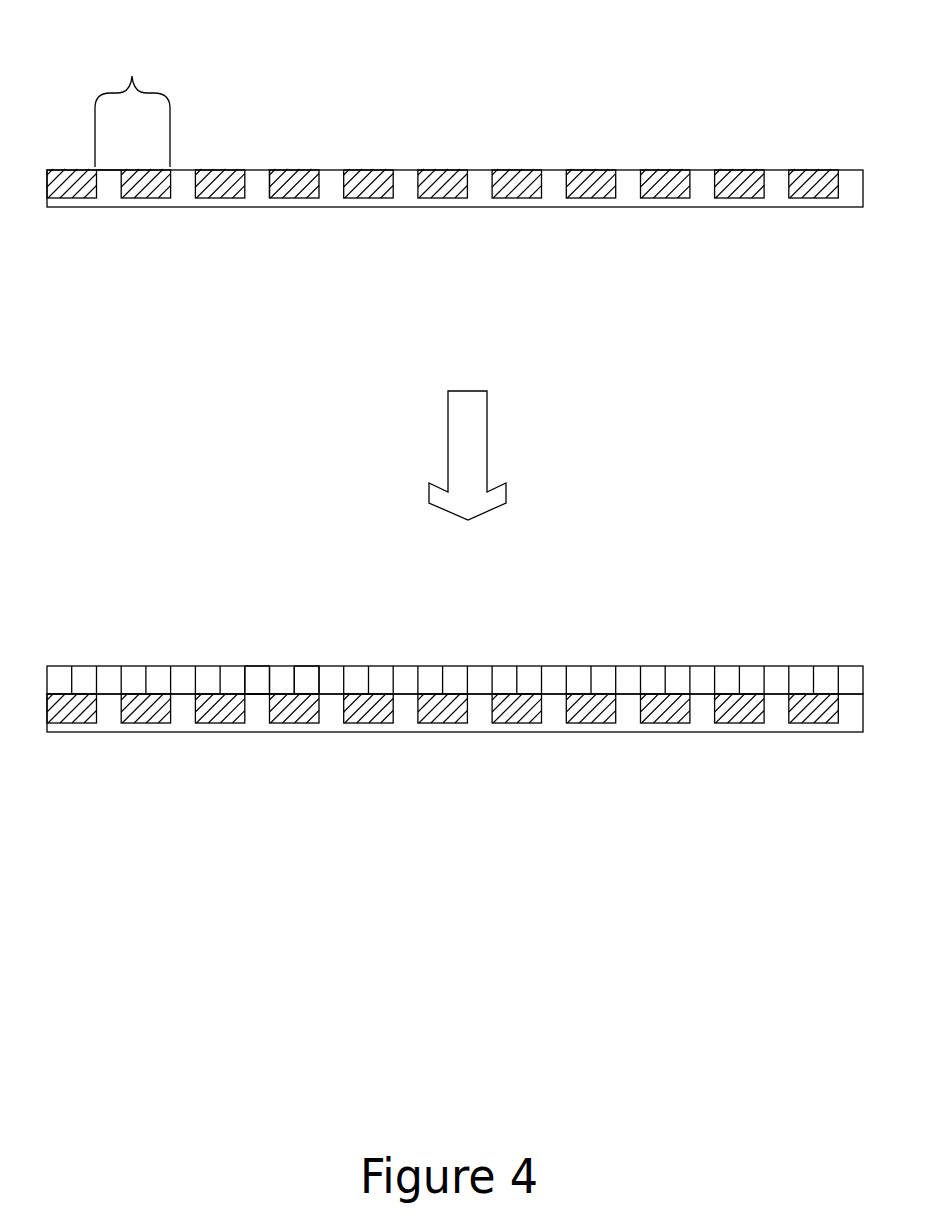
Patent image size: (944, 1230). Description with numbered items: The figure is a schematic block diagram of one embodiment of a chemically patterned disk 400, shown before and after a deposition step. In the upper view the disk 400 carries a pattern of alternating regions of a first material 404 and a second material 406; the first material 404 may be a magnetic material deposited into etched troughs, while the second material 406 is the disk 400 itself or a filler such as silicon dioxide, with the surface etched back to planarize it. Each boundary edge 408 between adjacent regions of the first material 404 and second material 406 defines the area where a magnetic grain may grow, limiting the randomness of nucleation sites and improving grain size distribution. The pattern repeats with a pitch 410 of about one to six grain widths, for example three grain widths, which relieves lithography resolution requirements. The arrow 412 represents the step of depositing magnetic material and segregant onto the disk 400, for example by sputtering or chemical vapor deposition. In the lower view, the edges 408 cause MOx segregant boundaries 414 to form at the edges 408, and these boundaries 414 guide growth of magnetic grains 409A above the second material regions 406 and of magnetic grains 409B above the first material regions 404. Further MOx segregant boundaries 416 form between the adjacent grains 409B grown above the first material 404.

The chemically patterned disk 400 is at (80, 208).
The first material 404 is at (443, 180).
The second material 406 is at (328, 178).
The boundary edge 408 is at (270, 188).
The pitch 410 is at (132, 104).
The arrow 412 is at (488, 456).
The MOx segregant boundaries 414 is at (280, 682).
The magnetic grains 409A is at (255, 678).
The magnetic grains 409B is at (292, 678).
The MOx segregant boundaries 416 is at (295, 683).